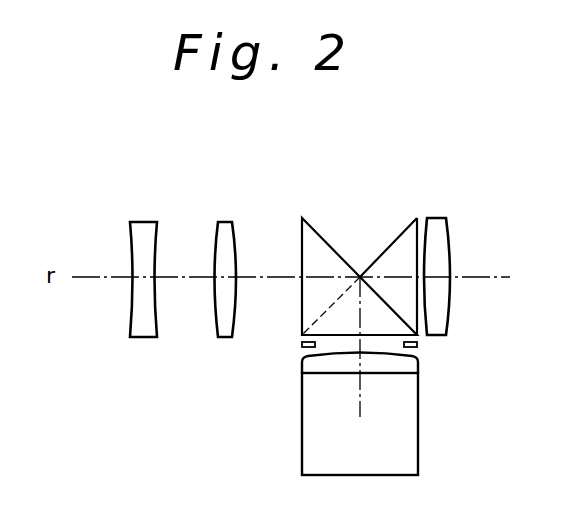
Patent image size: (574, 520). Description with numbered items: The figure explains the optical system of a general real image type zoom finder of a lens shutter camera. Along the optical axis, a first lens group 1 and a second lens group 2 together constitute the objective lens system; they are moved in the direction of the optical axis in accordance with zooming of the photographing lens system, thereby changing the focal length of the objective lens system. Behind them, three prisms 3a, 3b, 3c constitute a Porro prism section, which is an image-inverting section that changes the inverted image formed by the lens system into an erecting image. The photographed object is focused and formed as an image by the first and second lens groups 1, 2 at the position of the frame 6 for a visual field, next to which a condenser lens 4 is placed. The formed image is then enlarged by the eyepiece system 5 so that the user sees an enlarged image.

The first lens group 1 is at (147, 230).
The second lens group 2 is at (228, 226).
The prism 3a is at (310, 232).
The prism 3b is at (405, 230).
The prism 3c is at (312, 422).
The condenser lens 4 is at (310, 364).
The eyepiece system 5 is at (442, 232).
The frame for a visual field 6 is at (300, 346).